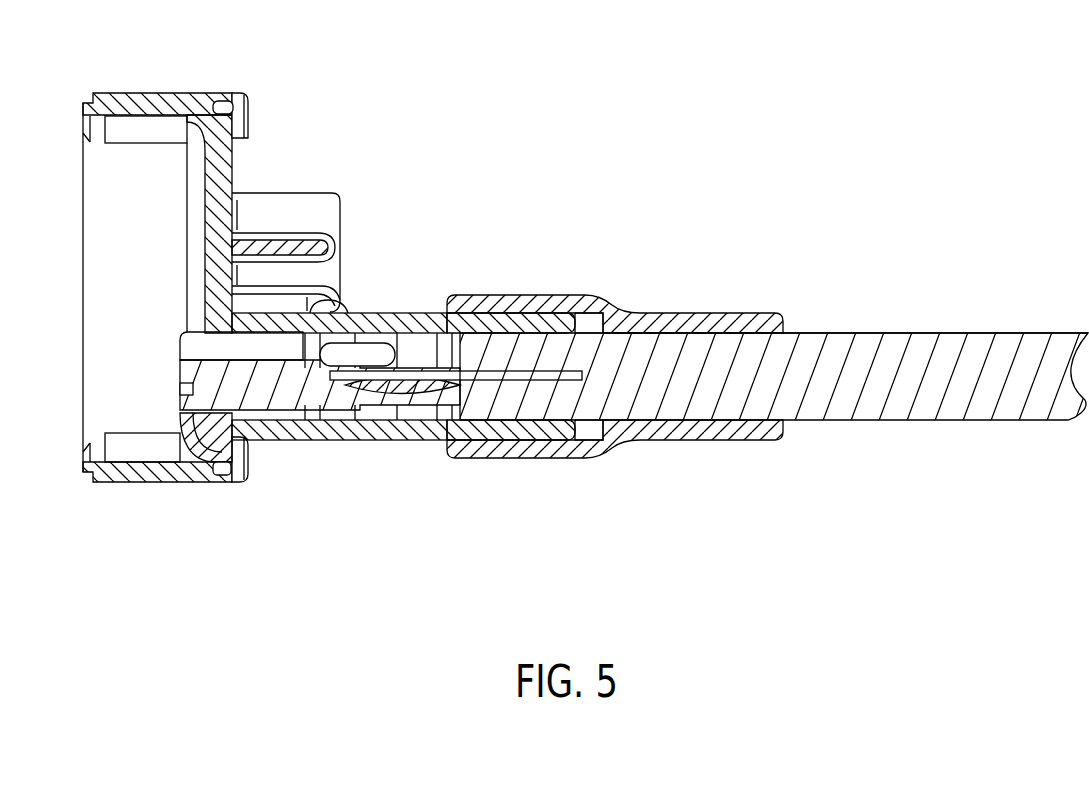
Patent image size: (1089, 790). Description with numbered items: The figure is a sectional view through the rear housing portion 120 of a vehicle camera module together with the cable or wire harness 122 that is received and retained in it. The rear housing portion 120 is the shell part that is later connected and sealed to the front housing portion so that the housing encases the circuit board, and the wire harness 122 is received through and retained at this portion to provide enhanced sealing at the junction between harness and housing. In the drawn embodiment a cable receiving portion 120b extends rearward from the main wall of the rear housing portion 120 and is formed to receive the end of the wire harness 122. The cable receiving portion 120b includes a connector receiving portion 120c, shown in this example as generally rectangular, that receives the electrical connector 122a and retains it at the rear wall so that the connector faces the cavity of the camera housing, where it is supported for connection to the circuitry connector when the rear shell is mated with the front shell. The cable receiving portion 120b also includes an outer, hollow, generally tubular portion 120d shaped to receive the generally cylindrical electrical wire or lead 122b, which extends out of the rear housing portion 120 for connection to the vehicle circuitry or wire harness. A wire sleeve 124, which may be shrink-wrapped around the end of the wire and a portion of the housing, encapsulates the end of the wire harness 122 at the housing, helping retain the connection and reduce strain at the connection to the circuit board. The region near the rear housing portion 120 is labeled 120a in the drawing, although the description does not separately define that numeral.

The rear housing portion 120 is at (343, 269).
The flange 120a is at (155, 96).
The cable receiving portion 120b is at (405, 259).
The connector receiving portion 120c is at (297, 441).
The outer tube portion 120d is at (426, 433).
The cable or wire harness 122 is at (622, 411).
The electrical connector 122a is at (217, 443).
The electrical wire or lead 122b is at (918, 340).
The wire sleeve 124 is at (672, 433).